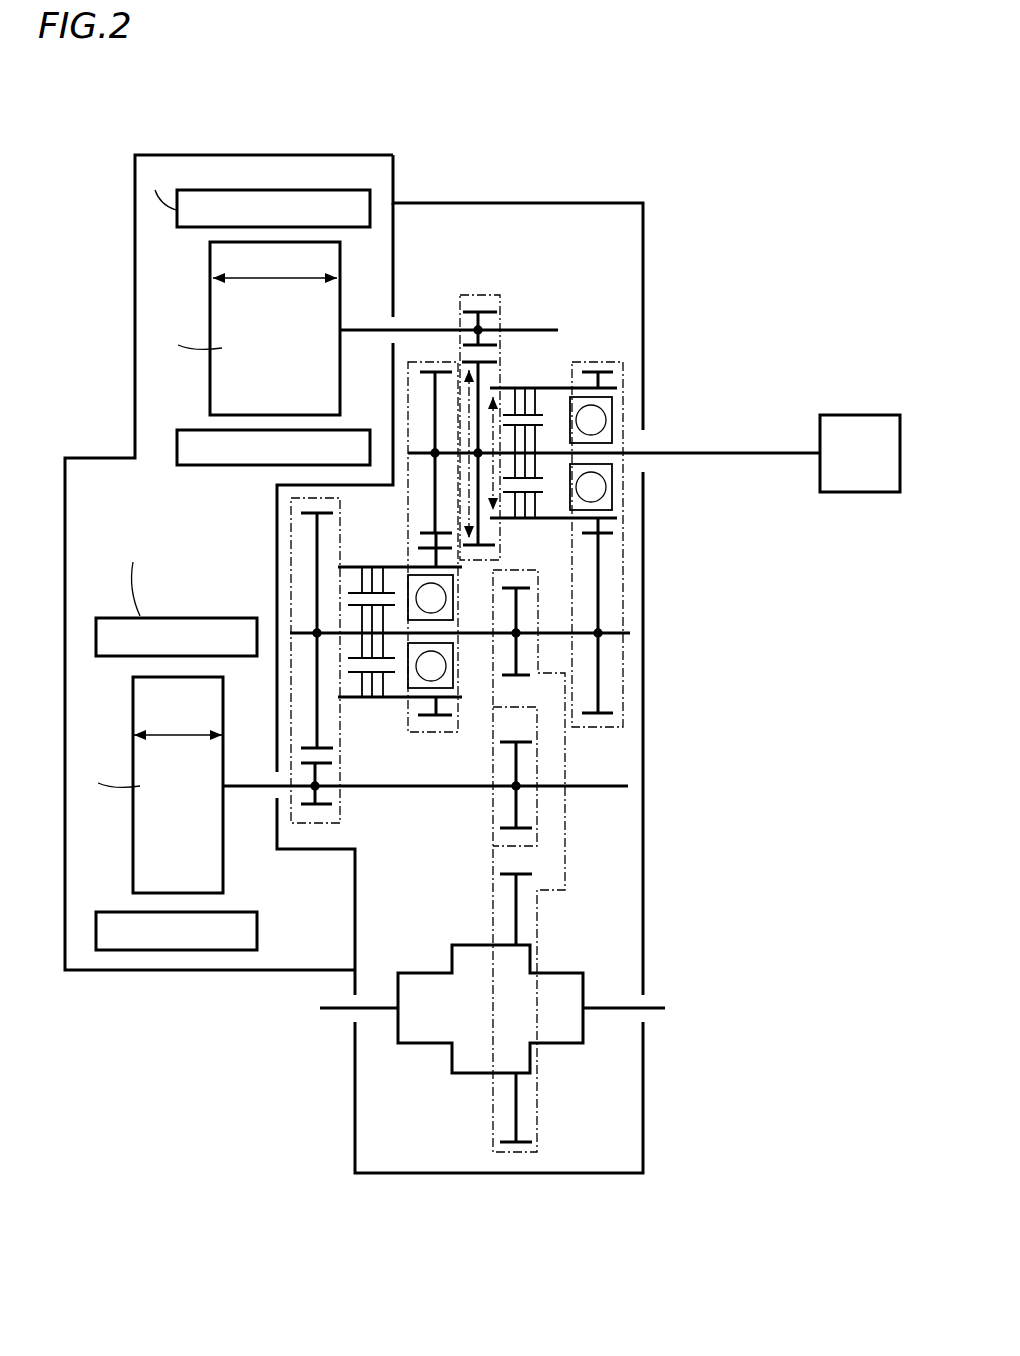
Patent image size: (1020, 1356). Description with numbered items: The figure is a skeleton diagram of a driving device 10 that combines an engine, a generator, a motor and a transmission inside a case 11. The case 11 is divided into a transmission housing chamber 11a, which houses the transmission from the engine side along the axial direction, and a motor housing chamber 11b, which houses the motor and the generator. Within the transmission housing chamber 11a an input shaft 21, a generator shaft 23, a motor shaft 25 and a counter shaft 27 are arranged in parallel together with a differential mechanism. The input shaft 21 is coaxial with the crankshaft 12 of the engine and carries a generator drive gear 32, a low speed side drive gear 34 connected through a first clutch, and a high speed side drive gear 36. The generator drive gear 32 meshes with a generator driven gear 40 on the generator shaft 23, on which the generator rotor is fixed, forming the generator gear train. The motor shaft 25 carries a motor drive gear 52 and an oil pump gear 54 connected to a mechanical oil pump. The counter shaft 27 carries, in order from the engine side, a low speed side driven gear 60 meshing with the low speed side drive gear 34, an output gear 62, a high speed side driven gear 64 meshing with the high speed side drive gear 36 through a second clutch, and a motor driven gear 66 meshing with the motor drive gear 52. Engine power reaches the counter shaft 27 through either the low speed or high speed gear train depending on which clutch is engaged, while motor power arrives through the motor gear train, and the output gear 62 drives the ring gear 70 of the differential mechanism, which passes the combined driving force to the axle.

The driving device 10 is at (526, 137).
The case 11 is at (645, 238).
The transmission housing chamber 11a is at (615, 835).
The motor housing chamber 11b is at (105, 490).
The crankshaft 12 is at (750, 452).
The input shaft 21 is at (628, 452).
The generator shaft 23 is at (500, 322).
The motor shaft 25 is at (612, 782).
The counter shaft 27 is at (625, 645).
The generator drive gear 32 is at (479, 370).
The low speed side drive gear 34 is at (602, 372).
The high speed side drive gear 36 is at (420, 372).
The generator driven gear 40 is at (478, 296).
The motor drive gear 52 is at (340, 815).
The oil pump gear 54 is at (510, 742).
The low speed side driven gear 60 is at (625, 553).
The output gear 62 is at (525, 586).
The high speed side driven gear 64 is at (437, 718).
The motor driven gear 66 is at (330, 513).
The ring gear 70 is at (510, 873).